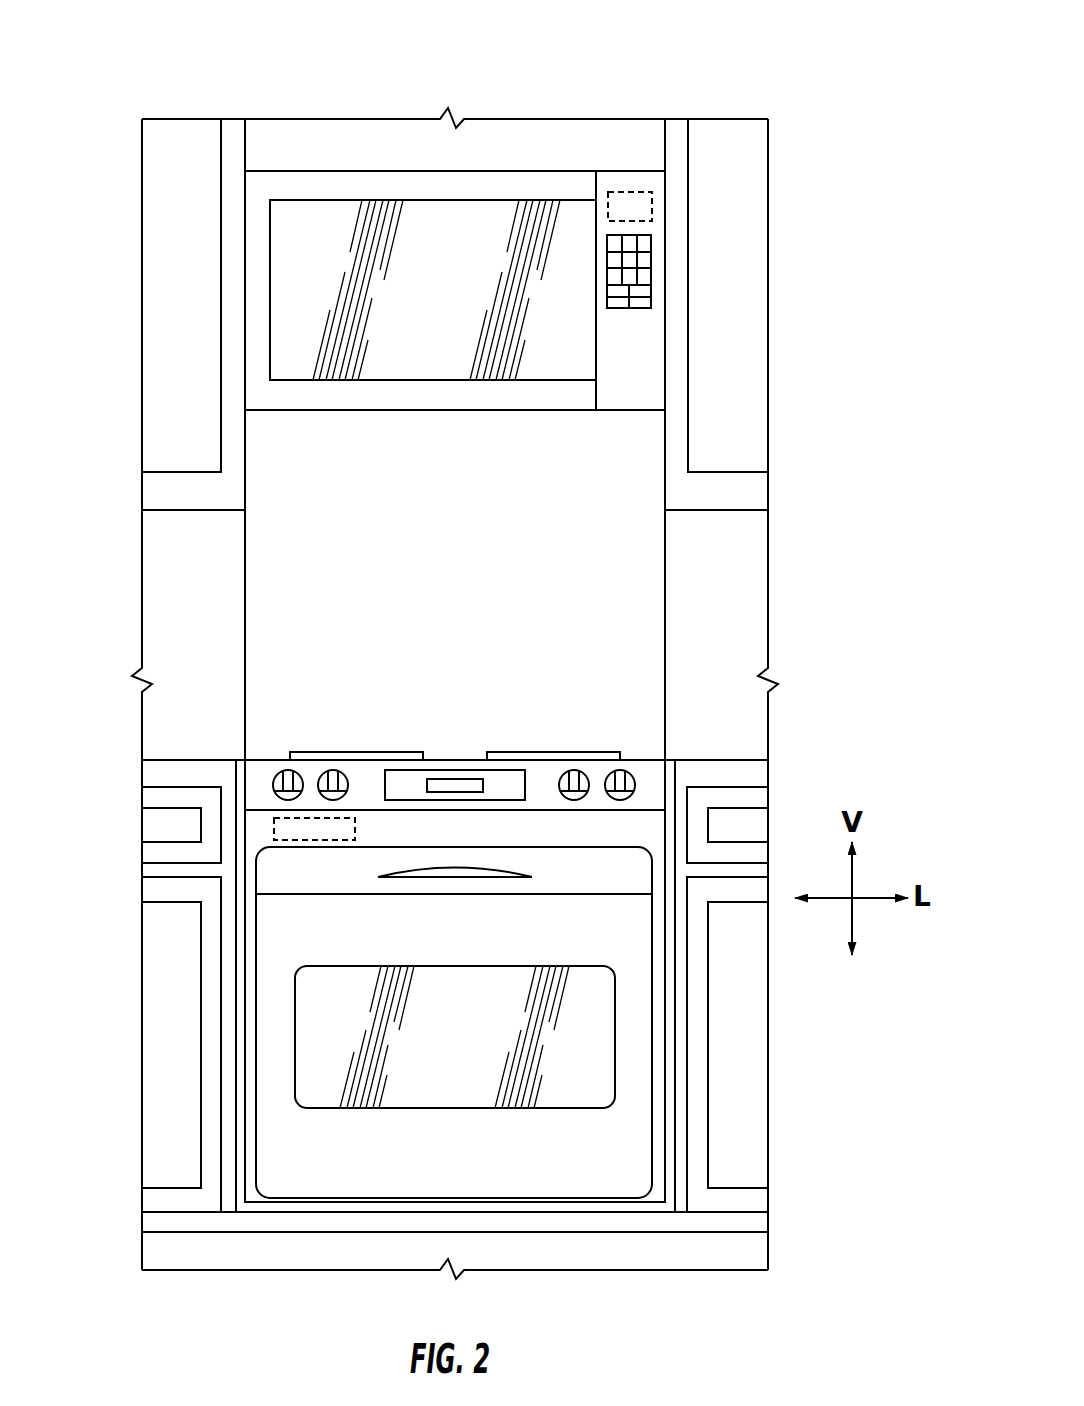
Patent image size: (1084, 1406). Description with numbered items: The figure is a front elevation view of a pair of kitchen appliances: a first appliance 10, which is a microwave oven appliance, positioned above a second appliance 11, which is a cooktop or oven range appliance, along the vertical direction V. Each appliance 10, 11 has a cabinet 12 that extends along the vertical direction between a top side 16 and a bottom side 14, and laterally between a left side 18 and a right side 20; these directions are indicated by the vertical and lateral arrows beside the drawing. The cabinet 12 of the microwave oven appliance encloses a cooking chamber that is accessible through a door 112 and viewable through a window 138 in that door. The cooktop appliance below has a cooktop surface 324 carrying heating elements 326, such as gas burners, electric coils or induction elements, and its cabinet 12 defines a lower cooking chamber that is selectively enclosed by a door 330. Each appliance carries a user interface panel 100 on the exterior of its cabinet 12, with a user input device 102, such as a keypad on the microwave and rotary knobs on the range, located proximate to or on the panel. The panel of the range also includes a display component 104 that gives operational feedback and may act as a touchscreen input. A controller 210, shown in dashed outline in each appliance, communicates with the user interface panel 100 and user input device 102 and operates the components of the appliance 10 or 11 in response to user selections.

The first appliance 10 is at (177, 50).
The second appliance 11 is at (232, 972).
The cabinet 12 is at (652, 398).
The bottom side 14 is at (520, 410).
The top side 16 is at (365, 170).
The left side 18 is at (243, 325).
The right side 20 is at (668, 342).
The user interface panel 100 is at (610, 377).
The user input device 102 is at (652, 277).
The display component 104 is at (385, 780).
The door 112 is at (628, 186).
The window 138 is at (296, 268).
The controller 210 is at (655, 208).
The cooktop surface 324 is at (270, 755).
The heating elements 326 is at (499, 752).
The door 330 is at (632, 1062).